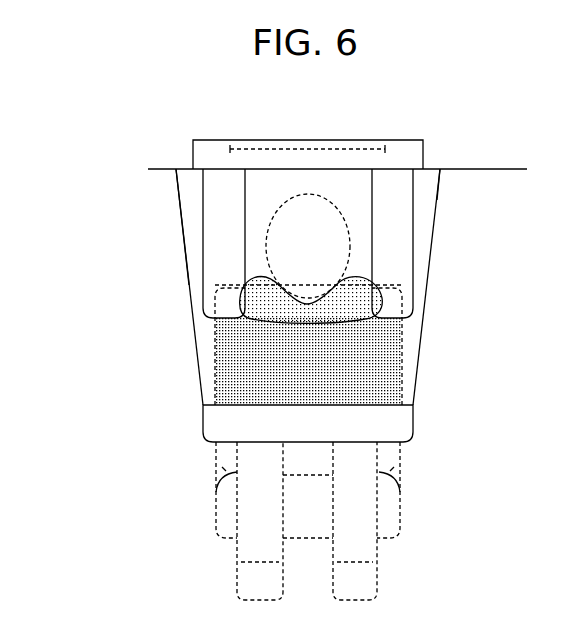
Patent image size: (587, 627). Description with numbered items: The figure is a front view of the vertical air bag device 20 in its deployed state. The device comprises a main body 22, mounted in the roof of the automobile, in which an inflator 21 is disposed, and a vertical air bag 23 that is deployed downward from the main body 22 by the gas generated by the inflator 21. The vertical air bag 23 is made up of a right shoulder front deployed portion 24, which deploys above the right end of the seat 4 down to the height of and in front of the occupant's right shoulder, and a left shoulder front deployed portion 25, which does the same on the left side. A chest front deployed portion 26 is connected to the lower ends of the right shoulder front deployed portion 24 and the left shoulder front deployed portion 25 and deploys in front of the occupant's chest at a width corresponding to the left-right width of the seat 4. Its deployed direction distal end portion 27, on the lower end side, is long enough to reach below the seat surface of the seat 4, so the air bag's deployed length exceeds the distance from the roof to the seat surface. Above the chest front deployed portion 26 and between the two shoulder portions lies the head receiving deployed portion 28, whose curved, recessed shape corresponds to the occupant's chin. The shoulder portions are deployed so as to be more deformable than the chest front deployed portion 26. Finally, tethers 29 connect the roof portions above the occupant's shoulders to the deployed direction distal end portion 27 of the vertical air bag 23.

The vertical air bag device 20 is at (104, 315).
The inflator 21 is at (333, 140).
The main body 22 is at (423, 160).
The vertical air bag 23 is at (516, 225).
The right shoulder front deployed portion 24 is at (210, 226).
The left shoulder front deployed portion 25 is at (414, 239).
The chest front deployed portion 26 is at (345, 360).
The deployed direction distal end portion 27 is at (413, 434).
The head receiving deployed portion 28 is at (378, 303).
The tethers 29 is at (188, 278).
The seat 4 is at (216, 501).